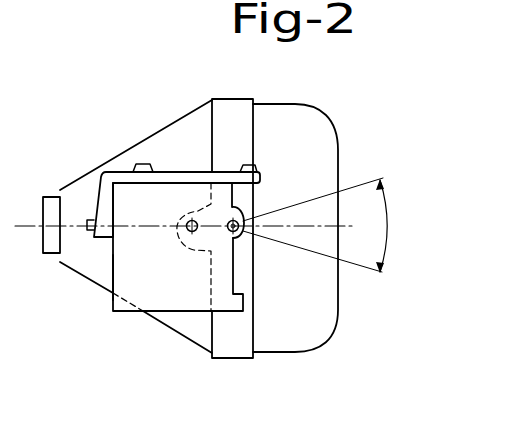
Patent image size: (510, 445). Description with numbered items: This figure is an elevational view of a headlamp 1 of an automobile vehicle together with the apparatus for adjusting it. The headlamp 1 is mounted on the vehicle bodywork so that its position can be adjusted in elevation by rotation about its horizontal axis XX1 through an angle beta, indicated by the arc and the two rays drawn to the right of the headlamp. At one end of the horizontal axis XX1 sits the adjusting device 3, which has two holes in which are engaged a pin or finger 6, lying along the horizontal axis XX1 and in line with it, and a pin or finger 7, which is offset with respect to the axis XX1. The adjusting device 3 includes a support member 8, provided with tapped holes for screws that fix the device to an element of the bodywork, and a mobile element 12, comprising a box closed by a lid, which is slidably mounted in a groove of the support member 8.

The headlamp 1 is at (158, 129).
The adjusting device 3 is at (162, 286).
The pin or finger 6 is at (233, 207).
The pin or finger 7 is at (184, 222).
The support member 8 is at (112, 170).
The mobile element 12 is at (112, 278).
The horizontal axis XX1 is at (236, 238).